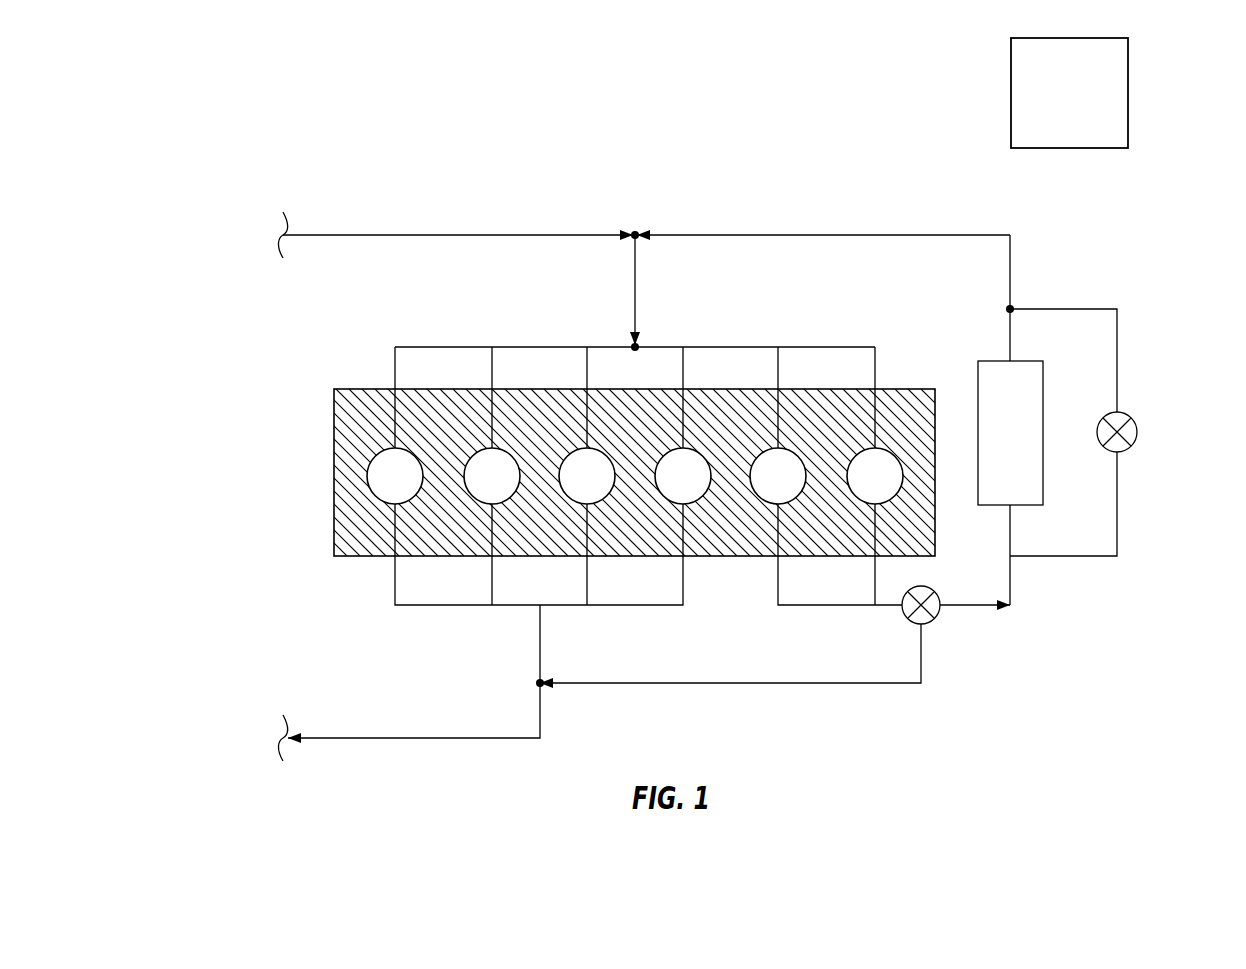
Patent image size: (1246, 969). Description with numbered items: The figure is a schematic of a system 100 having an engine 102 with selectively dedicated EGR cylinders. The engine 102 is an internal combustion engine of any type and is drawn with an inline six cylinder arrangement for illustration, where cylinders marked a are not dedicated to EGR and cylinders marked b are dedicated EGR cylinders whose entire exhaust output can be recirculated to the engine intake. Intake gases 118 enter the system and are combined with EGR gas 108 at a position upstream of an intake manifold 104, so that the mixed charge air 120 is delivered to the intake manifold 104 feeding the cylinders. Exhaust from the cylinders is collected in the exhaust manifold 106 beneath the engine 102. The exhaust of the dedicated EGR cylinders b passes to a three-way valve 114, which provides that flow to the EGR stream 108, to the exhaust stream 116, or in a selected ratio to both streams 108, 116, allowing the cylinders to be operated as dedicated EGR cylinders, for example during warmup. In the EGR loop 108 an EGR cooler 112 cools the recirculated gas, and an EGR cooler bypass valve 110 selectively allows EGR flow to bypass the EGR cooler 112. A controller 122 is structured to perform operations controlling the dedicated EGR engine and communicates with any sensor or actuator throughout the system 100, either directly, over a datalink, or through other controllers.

The system 100 is at (216, 127).
The engine 102 is at (333, 472).
The intake manifold 104 is at (733, 347).
The exhaust manifold 106 is at (443, 606).
The EGR gas 108 is at (978, 603).
The EGR cooler bypass valve 110 is at (1138, 432).
The EGR cooler 112 is at (992, 361).
The three-way valve 114 is at (901, 617).
The exhaust stream 116 is at (441, 740).
The intake gases 118 is at (425, 234).
The mixed charge air 120 is at (630, 272).
The controller 122 is at (1090, 107).